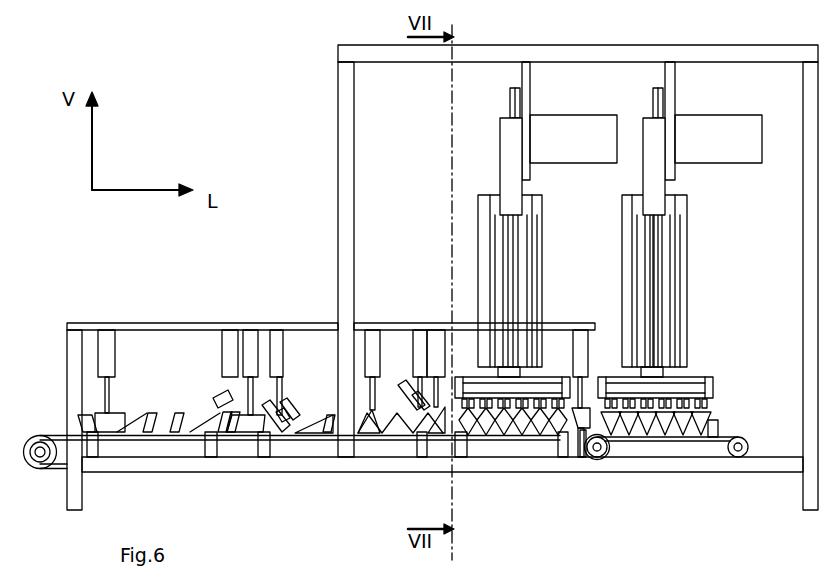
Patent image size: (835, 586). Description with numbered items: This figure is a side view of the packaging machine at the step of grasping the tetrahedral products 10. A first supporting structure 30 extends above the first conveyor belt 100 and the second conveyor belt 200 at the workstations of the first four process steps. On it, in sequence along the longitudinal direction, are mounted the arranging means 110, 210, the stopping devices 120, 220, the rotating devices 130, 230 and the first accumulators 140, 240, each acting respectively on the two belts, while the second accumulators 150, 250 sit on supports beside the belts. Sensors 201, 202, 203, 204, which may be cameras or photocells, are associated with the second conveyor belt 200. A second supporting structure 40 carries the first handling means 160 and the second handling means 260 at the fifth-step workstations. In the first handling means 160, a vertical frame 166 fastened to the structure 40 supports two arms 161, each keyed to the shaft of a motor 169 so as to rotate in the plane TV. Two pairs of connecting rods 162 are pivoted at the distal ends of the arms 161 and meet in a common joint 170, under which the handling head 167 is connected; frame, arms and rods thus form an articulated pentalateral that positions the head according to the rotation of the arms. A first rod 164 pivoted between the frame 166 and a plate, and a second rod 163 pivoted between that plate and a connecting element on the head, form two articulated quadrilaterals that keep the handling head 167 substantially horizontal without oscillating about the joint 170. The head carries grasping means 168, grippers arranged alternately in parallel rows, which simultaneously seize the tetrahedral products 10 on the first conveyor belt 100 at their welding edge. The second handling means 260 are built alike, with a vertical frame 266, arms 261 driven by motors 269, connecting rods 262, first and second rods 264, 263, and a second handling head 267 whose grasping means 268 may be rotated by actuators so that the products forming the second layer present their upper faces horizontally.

The tetrahedral products 10 is at (165, 395).
The first supporting structure 30 is at (172, 325).
The second supporting structure 40 is at (733, 52).
The first conveyor belt 100 is at (748, 462).
The arranging means 110 is at (240, 412).
The stopping device 120 is at (367, 413).
The rotating device 130 is at (415, 390).
The first accumulator 140 is at (600, 462).
The second accumulator 150 is at (720, 425).
The first handling means 160 is at (685, 262).
The arm 161 is at (648, 193).
The connecting rods 162 is at (624, 225).
The second rod 163 is at (648, 283).
The first rod 164 is at (655, 98).
The vertical frame 166 is at (668, 78).
The handling head 167 is at (700, 378).
The first grasping means 168 is at (660, 440).
The motors 169 is at (715, 123).
The common joint 170 is at (690, 342).
The second conveyor belt 200 is at (368, 470).
The sensor 201 is at (211, 450).
The sensor 202 is at (264, 450).
The sensor 203 is at (368, 440).
The sensor 204 is at (462, 465).
The arranging means 210 is at (110, 420).
The stopping device 220 is at (216, 396).
The rotating device 230 is at (290, 418).
The first accumulator 240 is at (421, 440).
The second accumulator 250 is at (562, 425).
The second handling means 260 is at (497, 262).
The arm 261 is at (503, 143).
The connecting rods 262 is at (483, 225).
The second rod 263 is at (500, 290).
The first rod 264 is at (512, 98).
The vertical frame 266 is at (525, 78).
The second handling head 267 is at (480, 378).
The grasping means 268 is at (492, 418).
The motors 269 is at (550, 123).